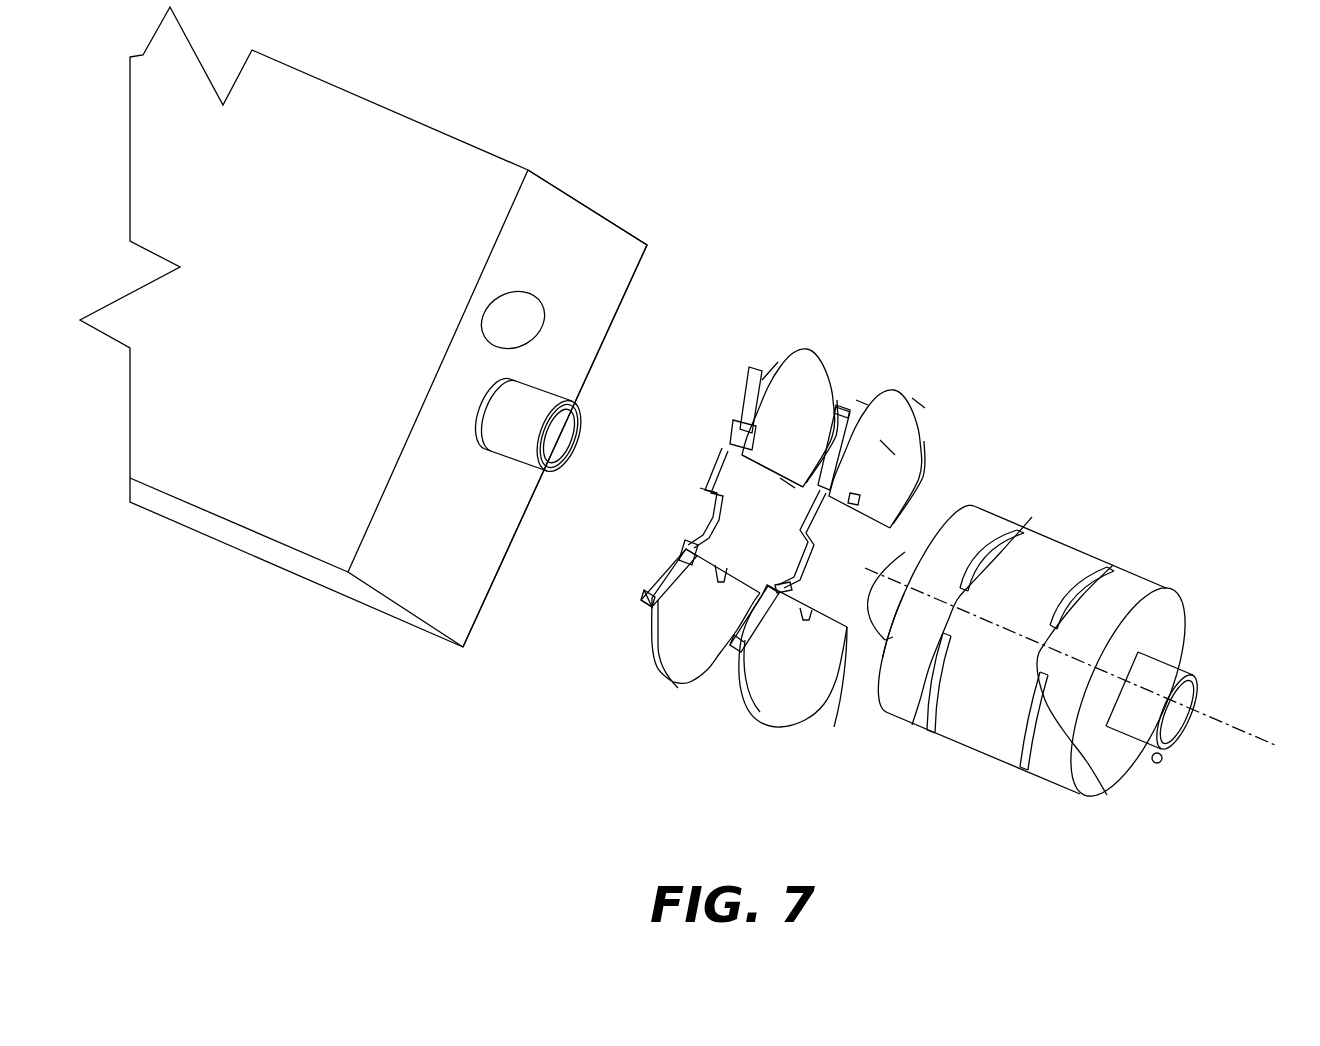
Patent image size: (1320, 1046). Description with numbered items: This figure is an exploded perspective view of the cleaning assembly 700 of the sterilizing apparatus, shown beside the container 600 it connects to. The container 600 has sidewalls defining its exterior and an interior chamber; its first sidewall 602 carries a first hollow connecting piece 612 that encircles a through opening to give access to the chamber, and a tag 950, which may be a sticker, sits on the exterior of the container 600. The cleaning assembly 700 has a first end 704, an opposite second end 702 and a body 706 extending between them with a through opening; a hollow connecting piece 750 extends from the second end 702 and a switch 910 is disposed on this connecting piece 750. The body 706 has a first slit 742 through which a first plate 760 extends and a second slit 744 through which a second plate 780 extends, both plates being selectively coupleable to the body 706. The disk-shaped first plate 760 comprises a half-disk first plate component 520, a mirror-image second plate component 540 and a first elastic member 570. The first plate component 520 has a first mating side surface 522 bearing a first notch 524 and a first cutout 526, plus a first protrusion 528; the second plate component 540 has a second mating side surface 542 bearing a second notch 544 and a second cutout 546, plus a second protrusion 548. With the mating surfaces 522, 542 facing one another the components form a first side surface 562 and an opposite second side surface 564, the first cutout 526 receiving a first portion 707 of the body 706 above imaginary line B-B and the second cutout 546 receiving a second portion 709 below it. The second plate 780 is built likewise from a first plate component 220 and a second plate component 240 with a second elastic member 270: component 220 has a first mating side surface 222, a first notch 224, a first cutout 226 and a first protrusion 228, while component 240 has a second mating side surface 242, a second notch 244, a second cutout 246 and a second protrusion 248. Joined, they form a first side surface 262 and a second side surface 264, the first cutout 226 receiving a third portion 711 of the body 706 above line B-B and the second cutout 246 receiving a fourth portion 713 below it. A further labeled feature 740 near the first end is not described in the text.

The container 600 is at (421, 104).
The first sidewall 602 is at (593, 243).
The tag 950 is at (523, 293).
The first hollow connecting piece 612 is at (510, 460).
The second plate 780 is at (778, 284).
The first plate component 220 is at (805, 390).
The first mating side surface 222 is at (790, 483).
The first notch 224 is at (777, 463).
The first cutout 226 is at (800, 487).
The first protrusion 228 is at (750, 368).
The second plate component 240 is at (652, 667).
The second mating side surface 242 is at (722, 578).
The second notch 244 is at (720, 570).
The second cutout 246 is at (693, 543).
The second protrusion 248 is at (640, 607).
The first side surface 262 is at (843, 402).
The second side surface 264 is at (776, 370).
The second elastic member 270 is at (700, 490).
The first elastic member 570 is at (795, 520).
The first plate 760 is at (958, 292).
The first plate component 520 is at (892, 398).
The first mating side surface 522 is at (890, 493).
The first notch 524 is at (887, 447).
The first cutout 526 is at (820, 493).
The first protrusion 528 is at (845, 406).
The second plate component 540 is at (747, 710).
The second mating side surface 542 is at (836, 665).
The second notch 544 is at (803, 613).
The second cutout 546 is at (780, 587).
The second protrusion 548 is at (733, 653).
The first side surface 562 is at (918, 402).
The second side surface 564 is at (862, 402).
The cleaning assembly 700 is at (1160, 532).
The second end 702 is at (1165, 617).
The first end 704 is at (945, 520).
The body 706 is at (1043, 563).
The first portion 707 is at (1140, 590).
The second portion 709 is at (1100, 790).
The third portion 711 is at (1033, 537).
The fourth portion 713 is at (897, 665).
The hub 740 is at (903, 560).
The first slit 742 is at (1027, 760).
The second slit 744 is at (932, 713).
The hollow connecting piece 750 is at (1172, 670).
The switch 910 is at (1162, 760).